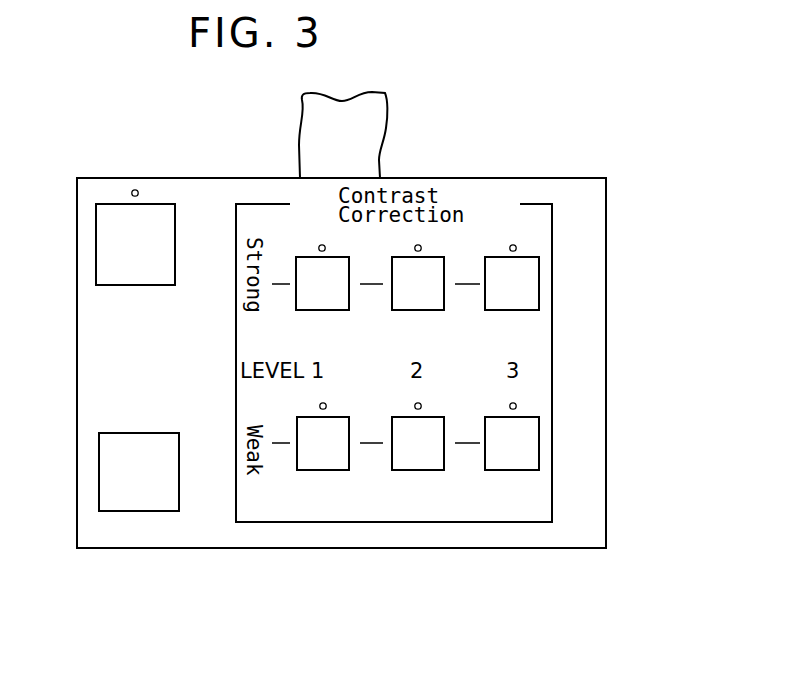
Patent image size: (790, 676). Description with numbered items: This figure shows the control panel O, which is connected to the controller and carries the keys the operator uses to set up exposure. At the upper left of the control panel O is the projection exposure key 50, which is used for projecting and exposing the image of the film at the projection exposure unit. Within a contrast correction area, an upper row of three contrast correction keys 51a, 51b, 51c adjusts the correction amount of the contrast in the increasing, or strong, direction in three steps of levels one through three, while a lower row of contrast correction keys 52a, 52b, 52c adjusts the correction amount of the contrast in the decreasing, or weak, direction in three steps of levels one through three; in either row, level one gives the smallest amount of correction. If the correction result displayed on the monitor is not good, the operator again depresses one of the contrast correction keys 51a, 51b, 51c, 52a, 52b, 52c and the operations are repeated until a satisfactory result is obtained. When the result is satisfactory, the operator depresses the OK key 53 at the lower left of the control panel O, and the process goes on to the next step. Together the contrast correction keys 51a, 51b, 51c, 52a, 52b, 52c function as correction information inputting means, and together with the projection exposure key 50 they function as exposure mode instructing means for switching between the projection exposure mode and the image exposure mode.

The control panel O is at (607, 432).
The projection exposure key 50 is at (93, 207).
The contrast correction key 51a is at (296, 257).
The contrast correction key 51b is at (444, 257).
The contrast correction key 51c is at (539, 284).
The contrast correction key 52a is at (305, 470).
The contrast correction key 52b is at (417, 470).
The contrast correction key 52c is at (527, 470).
The OK key 53 is at (140, 511).